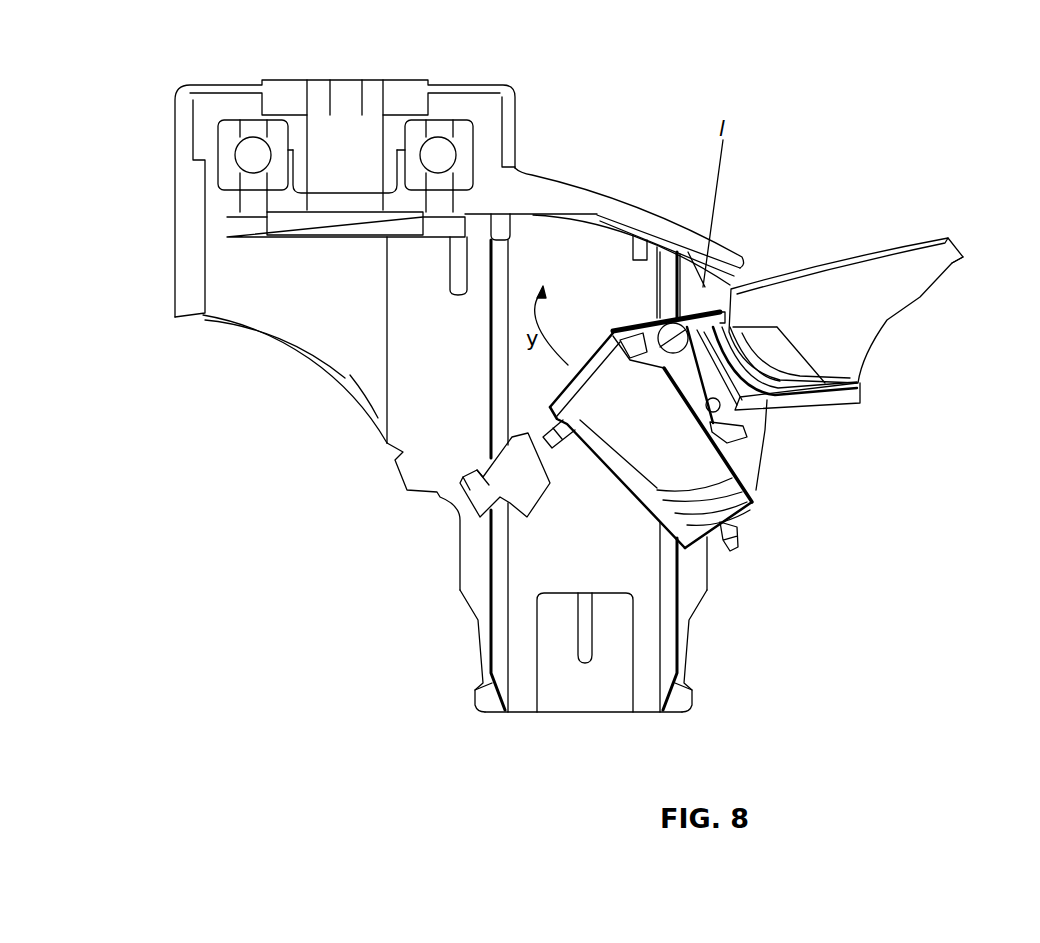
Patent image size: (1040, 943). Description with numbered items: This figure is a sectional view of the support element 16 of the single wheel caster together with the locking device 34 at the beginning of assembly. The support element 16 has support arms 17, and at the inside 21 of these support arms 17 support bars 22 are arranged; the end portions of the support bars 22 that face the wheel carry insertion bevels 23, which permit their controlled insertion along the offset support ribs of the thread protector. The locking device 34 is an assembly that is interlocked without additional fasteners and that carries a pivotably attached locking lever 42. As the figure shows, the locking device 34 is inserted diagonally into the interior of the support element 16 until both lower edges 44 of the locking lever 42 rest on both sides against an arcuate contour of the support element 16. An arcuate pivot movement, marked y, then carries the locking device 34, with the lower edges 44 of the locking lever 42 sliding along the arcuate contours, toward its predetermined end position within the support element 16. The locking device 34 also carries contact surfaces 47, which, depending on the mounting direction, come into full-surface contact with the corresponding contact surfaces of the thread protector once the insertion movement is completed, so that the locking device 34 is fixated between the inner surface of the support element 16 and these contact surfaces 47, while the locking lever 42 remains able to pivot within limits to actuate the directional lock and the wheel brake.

The support element 16 is at (590, 168).
The support arms 17 is at (736, 661).
The inside 21 is at (590, 551).
The support bars 22 is at (748, 605).
The insertion bevels 23 is at (700, 692).
The locking device 34 is at (732, 306).
The locking lever 42 is at (858, 337).
The lower edges of the locking lever 44 is at (778, 393).
The contact surfaces 47 is at (807, 407).